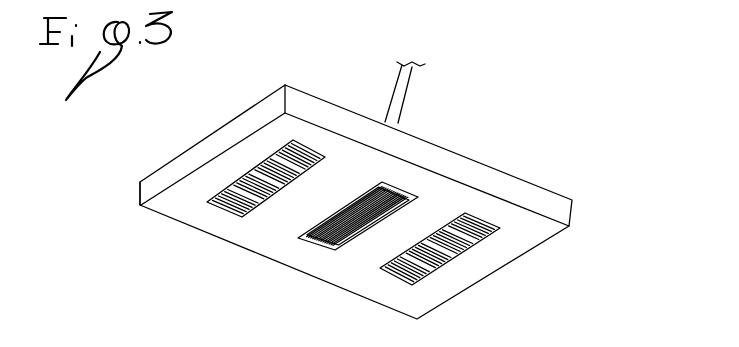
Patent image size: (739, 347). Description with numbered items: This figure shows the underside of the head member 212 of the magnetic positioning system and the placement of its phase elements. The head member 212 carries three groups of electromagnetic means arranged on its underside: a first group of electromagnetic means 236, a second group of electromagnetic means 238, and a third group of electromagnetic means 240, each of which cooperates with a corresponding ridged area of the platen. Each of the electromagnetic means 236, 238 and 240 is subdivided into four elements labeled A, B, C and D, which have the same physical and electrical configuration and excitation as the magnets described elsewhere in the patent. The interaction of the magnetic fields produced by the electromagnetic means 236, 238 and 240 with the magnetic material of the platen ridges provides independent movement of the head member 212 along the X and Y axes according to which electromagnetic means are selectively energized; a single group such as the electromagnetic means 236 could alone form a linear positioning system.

The head member 212 is at (518, 168).
The first group of electromagnetic means 236 is at (470, 243).
The second group of electromagnetic means 238 is at (308, 143).
The third group of electromagnetic means 240 is at (398, 183).